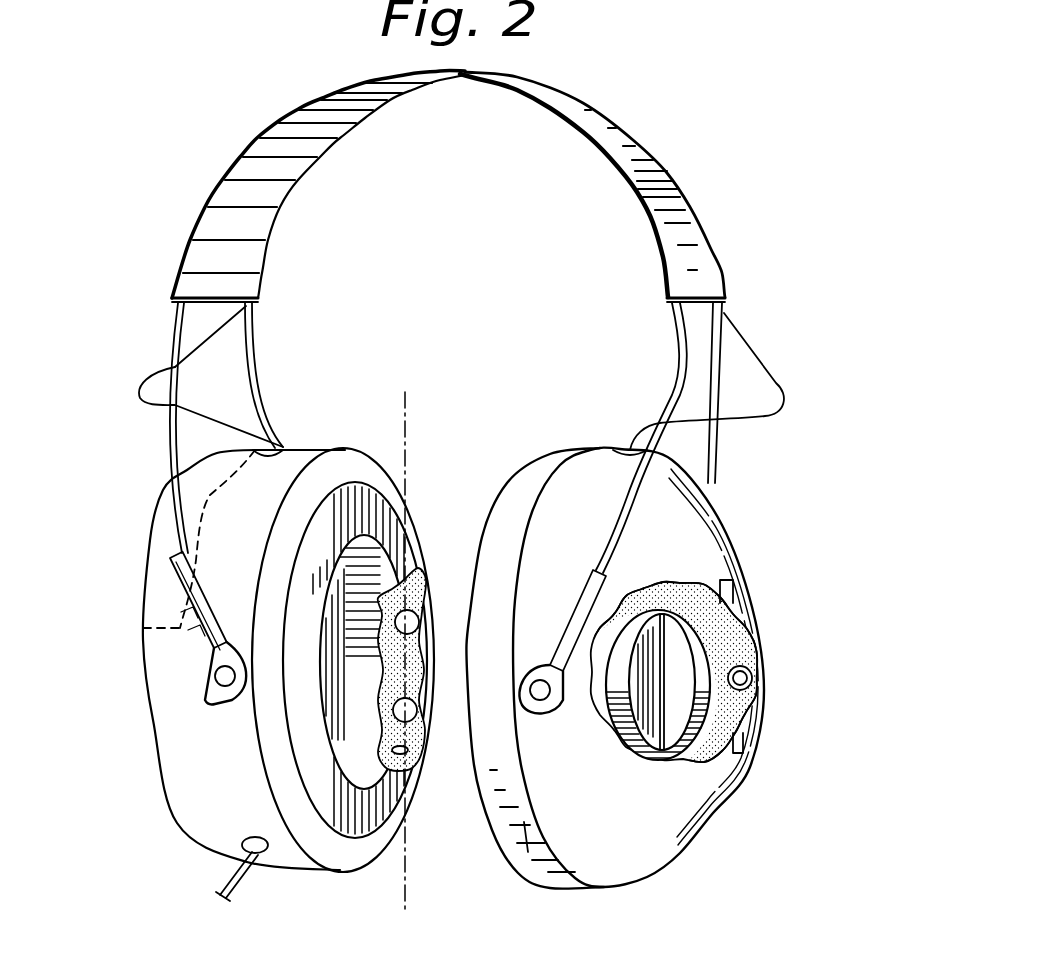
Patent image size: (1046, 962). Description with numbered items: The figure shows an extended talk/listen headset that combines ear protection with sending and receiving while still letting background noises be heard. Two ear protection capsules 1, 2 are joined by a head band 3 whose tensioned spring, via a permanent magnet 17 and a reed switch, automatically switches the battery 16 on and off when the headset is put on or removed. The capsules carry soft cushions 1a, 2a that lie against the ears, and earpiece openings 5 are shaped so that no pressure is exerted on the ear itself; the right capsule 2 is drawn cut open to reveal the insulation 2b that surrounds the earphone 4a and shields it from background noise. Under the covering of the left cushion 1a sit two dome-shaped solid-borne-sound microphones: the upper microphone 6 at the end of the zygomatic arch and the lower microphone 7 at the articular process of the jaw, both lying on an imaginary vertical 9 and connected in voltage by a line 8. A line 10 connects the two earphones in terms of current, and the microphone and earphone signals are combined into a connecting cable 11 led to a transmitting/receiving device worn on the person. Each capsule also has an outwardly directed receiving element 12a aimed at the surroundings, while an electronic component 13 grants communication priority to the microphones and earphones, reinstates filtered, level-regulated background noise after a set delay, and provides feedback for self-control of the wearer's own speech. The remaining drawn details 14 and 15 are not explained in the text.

The ear protection capsule 1 is at (193, 806).
The cushion 1a is at (312, 843).
The ear protection capsule 2 is at (653, 847).
The cushion 2a is at (527, 837).
The insulation 2b is at (749, 703).
The head band 3 is at (703, 243).
The earphone 4a is at (677, 717).
The earpiece opening 5 is at (363, 777).
The upper microphone 6 is at (410, 622).
The lower microphone 7 is at (410, 715).
The line 8 is at (405, 682).
The imaginary vertical 9 is at (407, 907).
The line 10 is at (137, 388).
The connecting cable 11 is at (223, 880).
The receiving element 12a is at (752, 678).
The electronic component 13 is at (733, 603).
The slot 14 is at (680, 683).
The hidden wire channel 15 is at (190, 473).
The battery 16 is at (163, 597).
The permanent magnet 17 is at (210, 650).